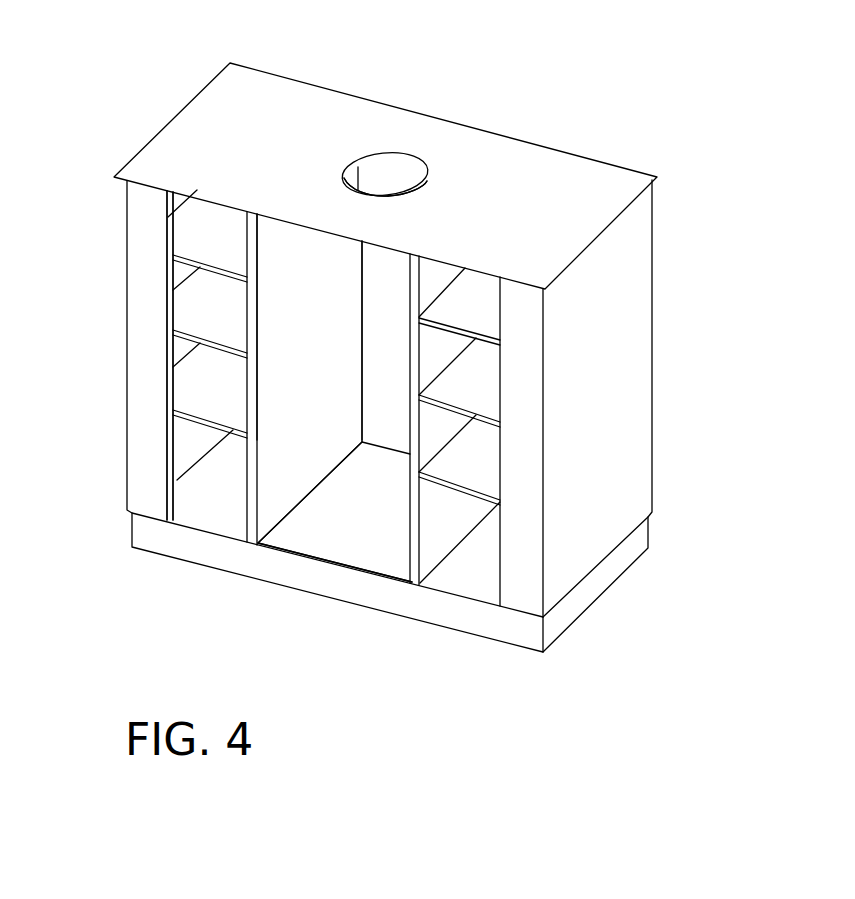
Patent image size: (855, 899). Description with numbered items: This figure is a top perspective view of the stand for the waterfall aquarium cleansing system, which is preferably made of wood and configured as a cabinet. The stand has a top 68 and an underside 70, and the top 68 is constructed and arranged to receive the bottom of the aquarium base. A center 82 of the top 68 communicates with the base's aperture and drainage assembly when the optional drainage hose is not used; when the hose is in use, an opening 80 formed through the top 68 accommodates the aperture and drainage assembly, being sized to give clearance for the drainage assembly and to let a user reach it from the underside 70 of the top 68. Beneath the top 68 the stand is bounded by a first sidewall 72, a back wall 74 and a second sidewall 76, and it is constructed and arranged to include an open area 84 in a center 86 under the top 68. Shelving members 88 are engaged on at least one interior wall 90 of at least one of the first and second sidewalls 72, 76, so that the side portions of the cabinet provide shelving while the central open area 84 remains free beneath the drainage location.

The top 68 is at (605, 177).
The underside 70 is at (386, 163).
The first sidewall 72 is at (190, 437).
The back wall 74 is at (398, 349).
The second sidewall 76 is at (630, 334).
The opening 80 is at (408, 176).
The center 82 is at (343, 167).
The open area 84 is at (303, 444).
The center 86 is at (318, 344).
The shelving members 88 is at (193, 228).
The interior wall 90 is at (172, 355).